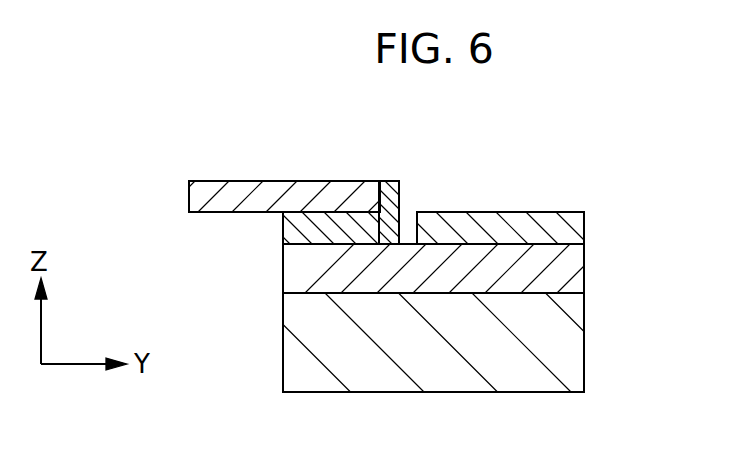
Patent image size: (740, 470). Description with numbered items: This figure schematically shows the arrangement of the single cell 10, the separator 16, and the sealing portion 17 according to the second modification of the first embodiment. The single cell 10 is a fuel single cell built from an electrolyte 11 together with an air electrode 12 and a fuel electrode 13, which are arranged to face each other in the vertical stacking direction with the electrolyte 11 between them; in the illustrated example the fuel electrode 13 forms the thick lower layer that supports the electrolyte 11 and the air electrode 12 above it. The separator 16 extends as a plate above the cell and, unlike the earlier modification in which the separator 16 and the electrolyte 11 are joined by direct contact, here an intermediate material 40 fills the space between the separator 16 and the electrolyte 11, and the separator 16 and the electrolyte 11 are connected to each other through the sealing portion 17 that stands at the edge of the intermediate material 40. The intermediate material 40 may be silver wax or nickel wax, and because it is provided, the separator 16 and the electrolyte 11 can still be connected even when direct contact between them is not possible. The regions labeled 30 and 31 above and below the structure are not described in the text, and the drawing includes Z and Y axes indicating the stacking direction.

The fuel single cell 10 is at (486, 302).
The electrolyte 11 is at (567, 273).
The air electrode 12 is at (567, 236).
The fuel electrode 13 is at (462, 342).
The separator 16 is at (240, 191).
The sealing portion 17 is at (392, 203).
The intermediate material 40 is at (327, 230).
The upper region 30 is at (479, 188).
The lower region 31 is at (238, 377).